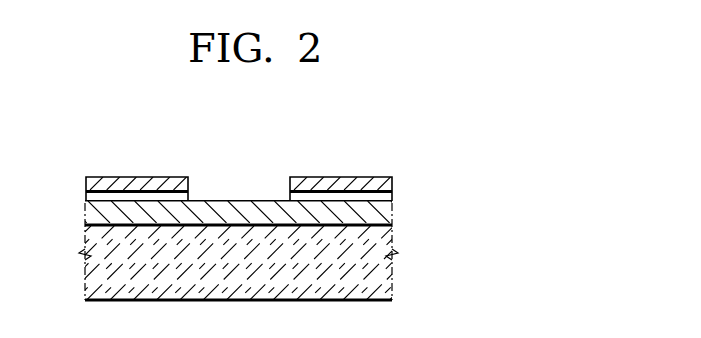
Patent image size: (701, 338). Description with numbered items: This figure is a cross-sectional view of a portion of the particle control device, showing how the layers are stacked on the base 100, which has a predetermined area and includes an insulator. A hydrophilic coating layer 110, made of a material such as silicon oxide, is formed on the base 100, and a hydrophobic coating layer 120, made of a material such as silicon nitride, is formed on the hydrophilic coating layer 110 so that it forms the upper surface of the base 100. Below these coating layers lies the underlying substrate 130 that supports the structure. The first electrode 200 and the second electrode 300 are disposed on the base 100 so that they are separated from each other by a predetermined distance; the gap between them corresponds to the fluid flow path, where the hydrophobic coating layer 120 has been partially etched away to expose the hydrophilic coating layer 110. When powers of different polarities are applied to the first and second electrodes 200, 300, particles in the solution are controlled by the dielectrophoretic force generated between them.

The base 100 is at (384, 168).
The hydrophilic coating layer 110 is at (238, 206).
The hydrophobic coating layer 120 is at (102, 183).
The substrate 130 is at (388, 274).
The first electrode 200 is at (343, 190).
The second electrode 300 is at (157, 199).